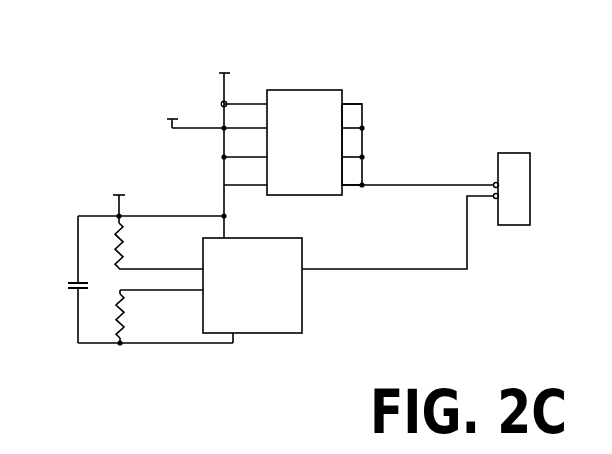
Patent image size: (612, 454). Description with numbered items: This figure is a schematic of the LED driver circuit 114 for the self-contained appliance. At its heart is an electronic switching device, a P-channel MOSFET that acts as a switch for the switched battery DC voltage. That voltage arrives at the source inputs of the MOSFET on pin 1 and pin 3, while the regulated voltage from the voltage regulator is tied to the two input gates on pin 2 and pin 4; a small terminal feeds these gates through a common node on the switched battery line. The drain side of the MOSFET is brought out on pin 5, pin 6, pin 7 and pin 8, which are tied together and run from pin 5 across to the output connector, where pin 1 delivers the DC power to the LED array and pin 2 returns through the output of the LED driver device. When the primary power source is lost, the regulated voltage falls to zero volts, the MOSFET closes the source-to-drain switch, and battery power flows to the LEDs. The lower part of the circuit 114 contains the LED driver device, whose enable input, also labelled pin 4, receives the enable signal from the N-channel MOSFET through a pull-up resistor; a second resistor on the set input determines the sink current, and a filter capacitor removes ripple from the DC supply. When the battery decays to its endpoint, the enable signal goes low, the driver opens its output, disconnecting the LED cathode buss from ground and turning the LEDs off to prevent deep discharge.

The LED driver circuit 114 is at (58, 65).
The pin 1 is at (371, 133).
The pin 2 is at (373, 163).
The pin 3 is at (245, 148).
The pin 4 is at (193, 216).
The pin 5 is at (352, 175).
The pin 6 is at (352, 148).
The pin 7 is at (352, 118).
The pin 8 is at (352, 91).